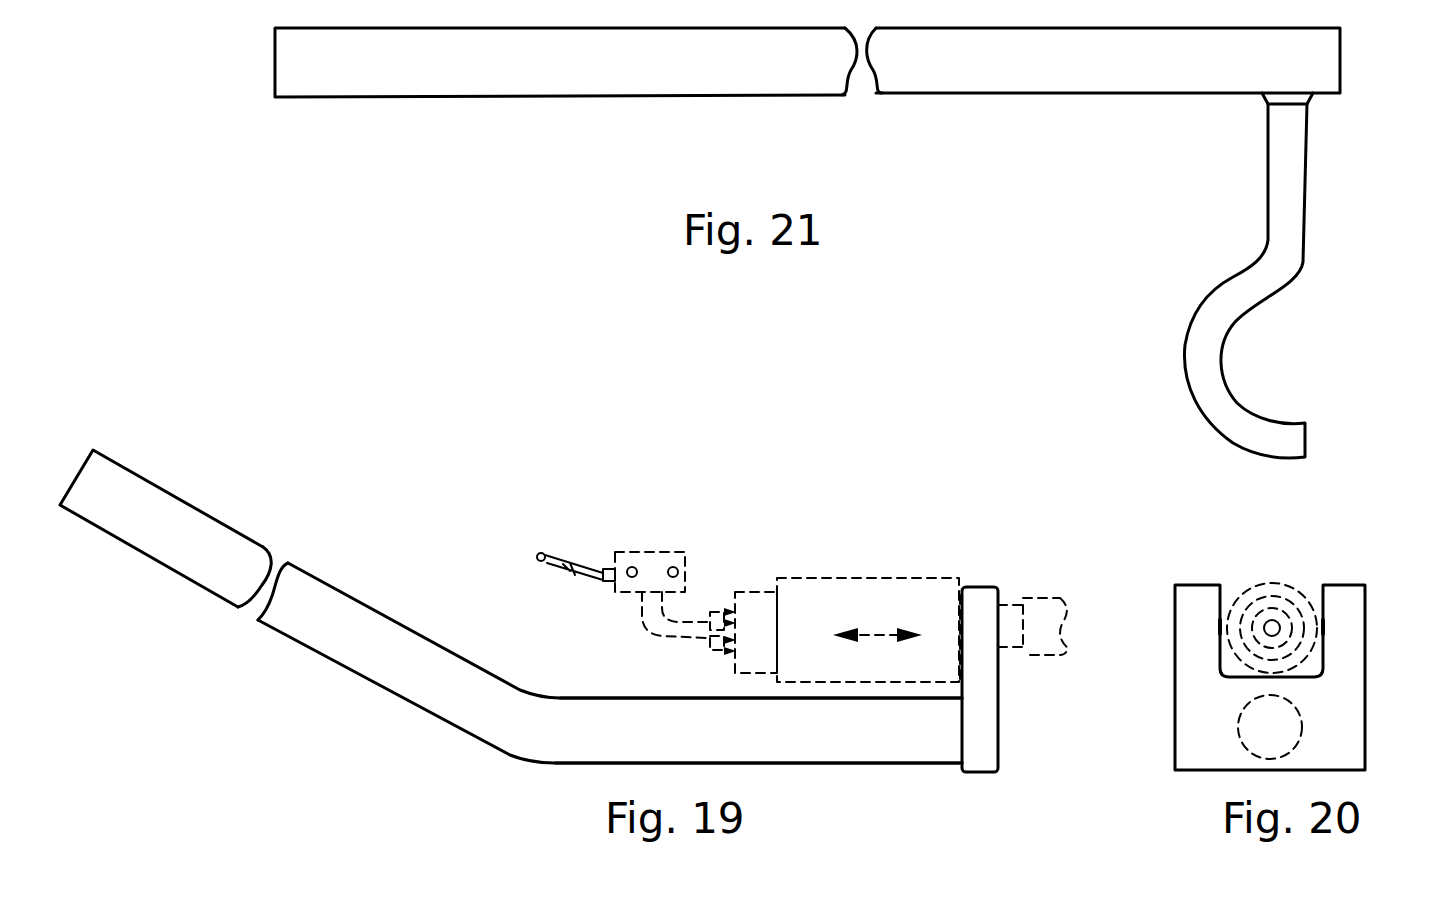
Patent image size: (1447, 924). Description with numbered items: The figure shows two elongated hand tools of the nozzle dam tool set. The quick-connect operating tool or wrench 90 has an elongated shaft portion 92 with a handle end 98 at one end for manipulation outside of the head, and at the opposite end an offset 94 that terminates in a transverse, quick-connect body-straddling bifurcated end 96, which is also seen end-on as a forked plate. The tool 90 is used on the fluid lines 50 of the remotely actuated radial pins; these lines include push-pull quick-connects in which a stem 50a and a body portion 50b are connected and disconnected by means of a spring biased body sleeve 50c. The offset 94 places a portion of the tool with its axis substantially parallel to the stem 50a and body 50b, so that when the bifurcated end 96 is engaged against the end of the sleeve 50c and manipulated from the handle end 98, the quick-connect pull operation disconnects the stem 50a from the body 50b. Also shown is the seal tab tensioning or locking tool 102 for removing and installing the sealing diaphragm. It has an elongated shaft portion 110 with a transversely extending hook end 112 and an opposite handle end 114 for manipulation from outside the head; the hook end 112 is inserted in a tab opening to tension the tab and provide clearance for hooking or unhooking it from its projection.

In FIG. 21, the seal tab tensioning or locking tool 102 is at (807, 243).
In FIG. 21, the elongated shaft portion 110 is at (730, 96).
In FIG. 21, the hook end 112 is at (1207, 293).
In FIG. 21, the handle end 114 is at (375, 97).
In FIG. 19, the quick-connect operating tool or wrench 90 is at (596, 634).
In FIG. 19, the shaft portion 92 is at (295, 640).
In FIG. 19, the offset 94 is at (817, 763).
In FIG. 20, the offset 94 is at (1240, 740).
In FIG. 19, the bifurcated end 96 is at (998, 672).
In FIG. 20, the bifurcated end 96 is at (1365, 705).
In FIG. 19, the handle end 98 is at (160, 565).
In FIG. 19, the fluid lines 50 is at (562, 578).
In FIG. 19, the stem 50a is at (1035, 605).
In FIG. 20, the stem 50a is at (1295, 600).
In FIG. 19, the body portion 50b is at (757, 592).
In FIG. 20, the body portion 50b is at (1272, 590).
In FIG. 19, the spring biased body sleeve 50c is at (900, 578).
In FIG. 20, the spring biased body sleeve 50c is at (1258, 580).